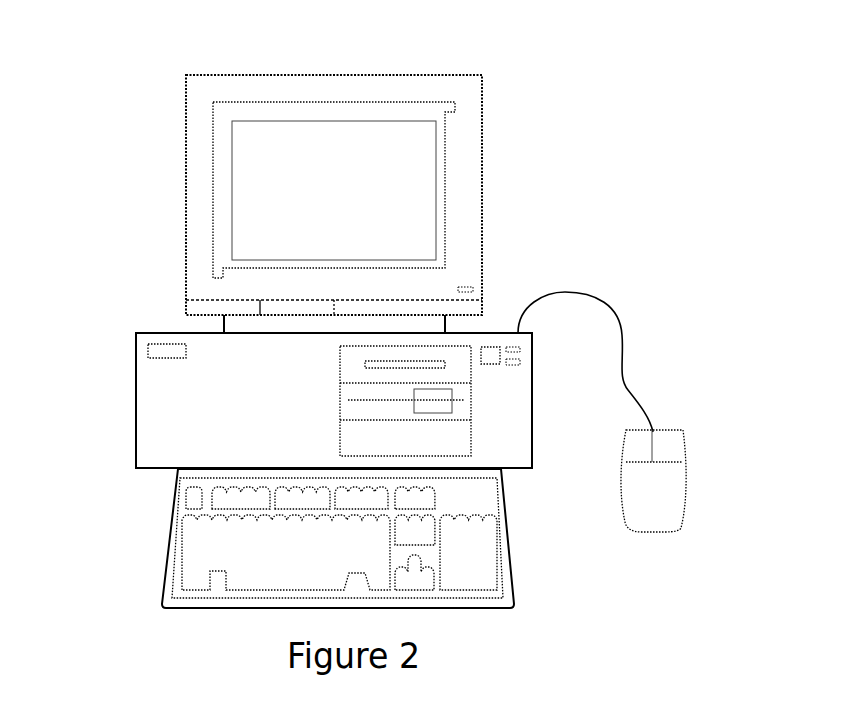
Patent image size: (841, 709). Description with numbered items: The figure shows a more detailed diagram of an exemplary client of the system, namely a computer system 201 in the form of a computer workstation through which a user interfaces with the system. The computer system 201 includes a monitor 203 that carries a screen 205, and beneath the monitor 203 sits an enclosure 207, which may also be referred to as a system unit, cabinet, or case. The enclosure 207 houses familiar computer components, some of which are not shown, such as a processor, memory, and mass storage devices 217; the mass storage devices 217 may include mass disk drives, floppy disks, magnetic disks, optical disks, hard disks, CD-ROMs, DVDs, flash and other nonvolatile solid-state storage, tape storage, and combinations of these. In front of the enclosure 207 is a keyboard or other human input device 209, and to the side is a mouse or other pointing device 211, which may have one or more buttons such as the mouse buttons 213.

The computer system 201 is at (528, 50).
The monitor 203 is at (482, 163).
The screen 205 is at (249, 179).
The enclosure 207 is at (165, 337).
The mass storage devices 217 is at (462, 348).
The keyboard 209 is at (208, 607).
The mouse 211 is at (652, 518).
The mouse buttons 213 is at (643, 452).